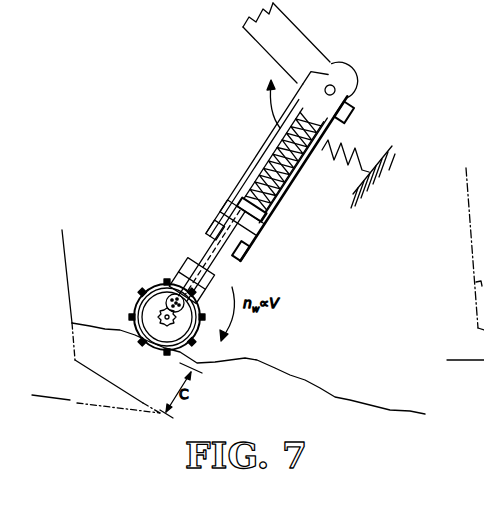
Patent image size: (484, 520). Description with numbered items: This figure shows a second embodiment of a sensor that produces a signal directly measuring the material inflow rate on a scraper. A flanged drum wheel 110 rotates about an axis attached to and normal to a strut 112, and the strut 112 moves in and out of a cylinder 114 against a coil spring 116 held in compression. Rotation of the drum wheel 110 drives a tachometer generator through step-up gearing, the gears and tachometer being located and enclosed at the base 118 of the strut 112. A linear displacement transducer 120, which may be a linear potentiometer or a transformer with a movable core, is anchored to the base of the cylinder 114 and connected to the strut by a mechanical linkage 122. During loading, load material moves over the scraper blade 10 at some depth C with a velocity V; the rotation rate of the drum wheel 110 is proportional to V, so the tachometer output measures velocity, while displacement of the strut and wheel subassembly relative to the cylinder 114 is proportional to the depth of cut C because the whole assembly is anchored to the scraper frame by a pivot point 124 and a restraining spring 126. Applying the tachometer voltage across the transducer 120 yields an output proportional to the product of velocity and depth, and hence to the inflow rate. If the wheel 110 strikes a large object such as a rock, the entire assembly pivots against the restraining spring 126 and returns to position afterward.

The scraper blade 10 is at (70, 388).
The flanged drum wheel 110 is at (160, 290).
The strut 112 is at (210, 248).
The cylinder 114 is at (250, 170).
The coil spring 116 is at (280, 200).
The base of the strut 118 is at (214, 287).
The linear displacement transducer 120 is at (283, 123).
The mechanical linkage 122 is at (245, 190).
The pivot point 124 is at (347, 85).
The restraining spring 126 is at (340, 142).